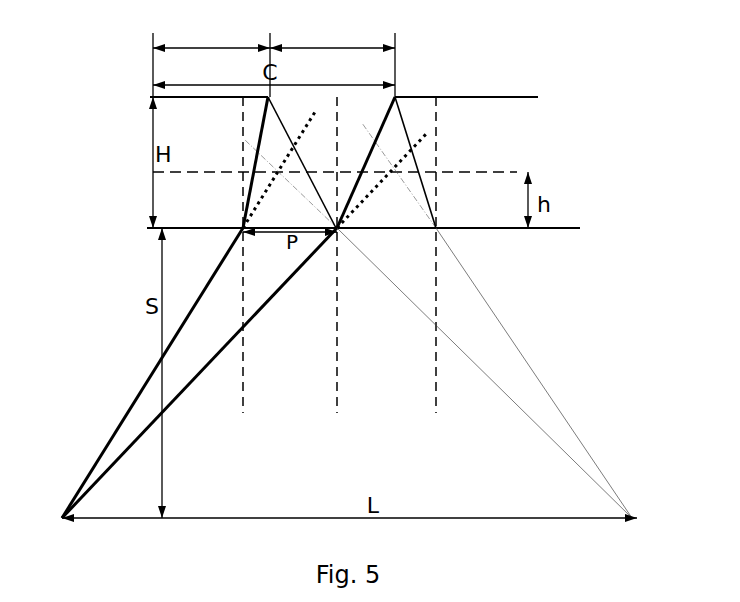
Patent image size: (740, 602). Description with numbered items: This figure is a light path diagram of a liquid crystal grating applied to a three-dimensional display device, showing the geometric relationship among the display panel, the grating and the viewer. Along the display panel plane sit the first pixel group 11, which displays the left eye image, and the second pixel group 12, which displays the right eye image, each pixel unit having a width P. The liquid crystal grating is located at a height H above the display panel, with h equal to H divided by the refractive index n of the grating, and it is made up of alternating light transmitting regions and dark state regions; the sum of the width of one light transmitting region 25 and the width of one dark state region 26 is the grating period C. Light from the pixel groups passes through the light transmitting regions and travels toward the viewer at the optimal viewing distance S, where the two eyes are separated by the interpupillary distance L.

The first pixel group 11 is at (289, 163).
The second pixel group 12 is at (386, 163).
The light transmitting region 25 is at (332, 36).
The dark state region 26 is at (211, 36).